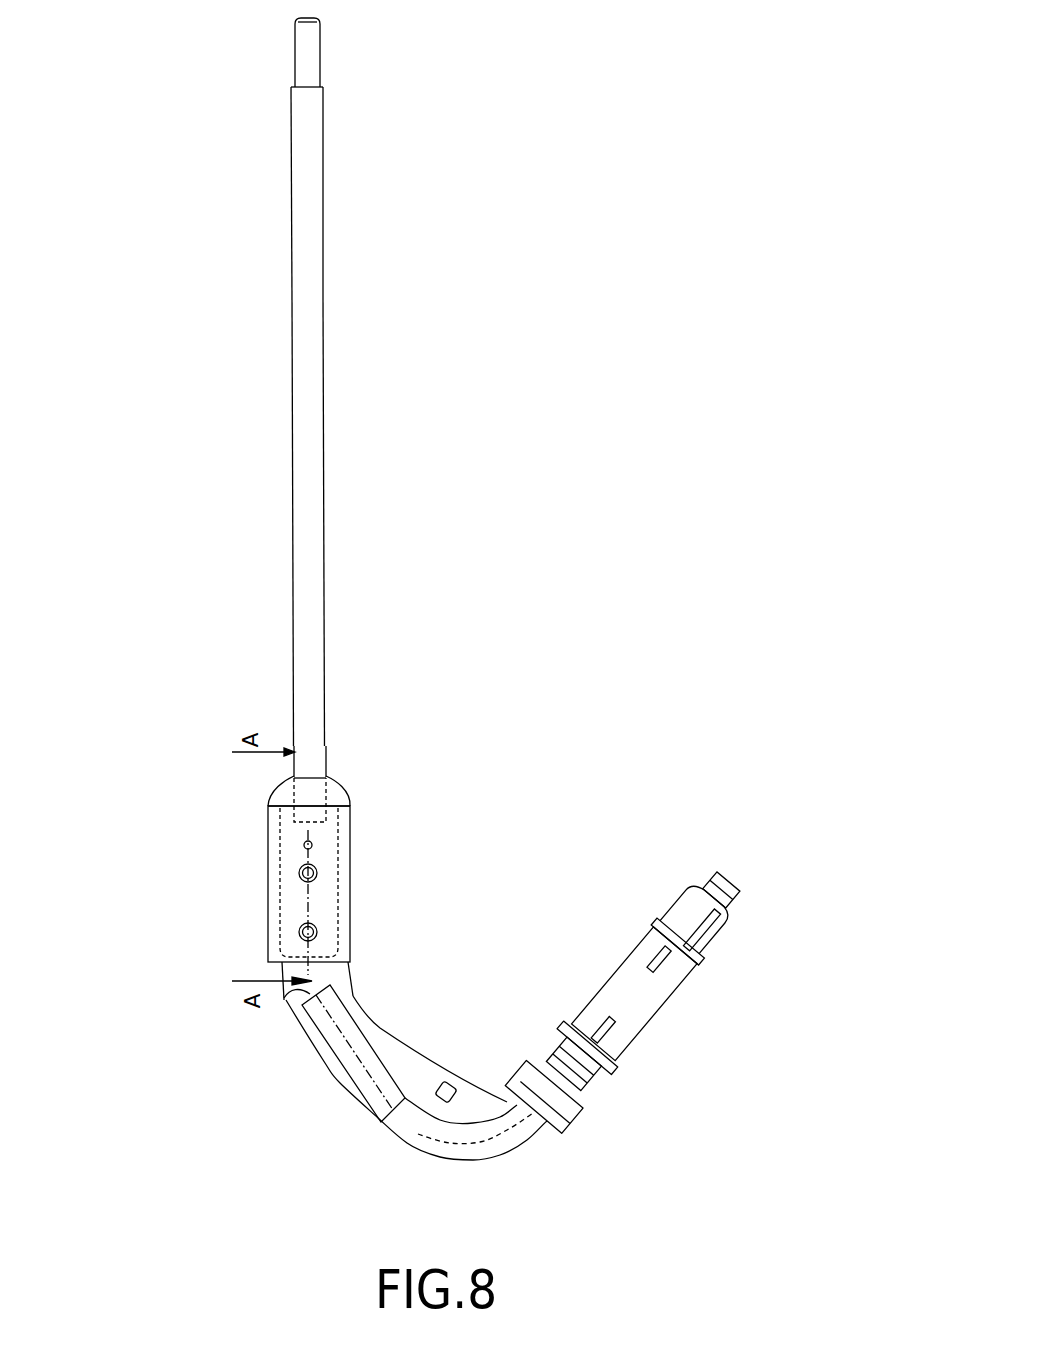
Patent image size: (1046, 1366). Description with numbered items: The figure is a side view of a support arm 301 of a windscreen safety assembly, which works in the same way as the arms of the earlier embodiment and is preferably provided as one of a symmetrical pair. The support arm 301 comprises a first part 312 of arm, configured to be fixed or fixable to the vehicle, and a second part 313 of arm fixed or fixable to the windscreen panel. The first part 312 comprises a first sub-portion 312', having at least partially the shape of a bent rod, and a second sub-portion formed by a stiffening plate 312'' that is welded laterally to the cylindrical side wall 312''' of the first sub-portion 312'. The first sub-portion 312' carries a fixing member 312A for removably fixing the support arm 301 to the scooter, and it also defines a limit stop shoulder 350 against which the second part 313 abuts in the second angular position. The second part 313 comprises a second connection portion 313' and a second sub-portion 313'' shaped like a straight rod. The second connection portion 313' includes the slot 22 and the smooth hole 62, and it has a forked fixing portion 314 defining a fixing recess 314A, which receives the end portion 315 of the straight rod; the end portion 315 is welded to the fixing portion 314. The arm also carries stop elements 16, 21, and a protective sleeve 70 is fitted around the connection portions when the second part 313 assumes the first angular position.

The support arm 301 is at (612, 262).
The second part of arm 313 is at (409, 523).
The second sub-portion 313'' is at (391, 160).
The second connection portion 313' is at (398, 809).
The fixing portion 314 is at (352, 797).
The fixing recess 314A is at (327, 746).
The end portion 315 is at (280, 800).
The protective sleeve 70 is at (268, 845).
The slot 22 is at (340, 886).
The stop element 21 is at (293, 872).
The smooth hole 62 is at (342, 935).
The stop element 16 is at (280, 896).
The limit stop shoulder 350 is at (296, 992).
The first part of arm 312 is at (386, 1086).
The first sub-portion 312' is at (463, 1179).
The stiffening plate 312'' is at (478, 1045).
The side wall 312''' is at (384, 1039).
The fixing member 312A is at (640, 1032).